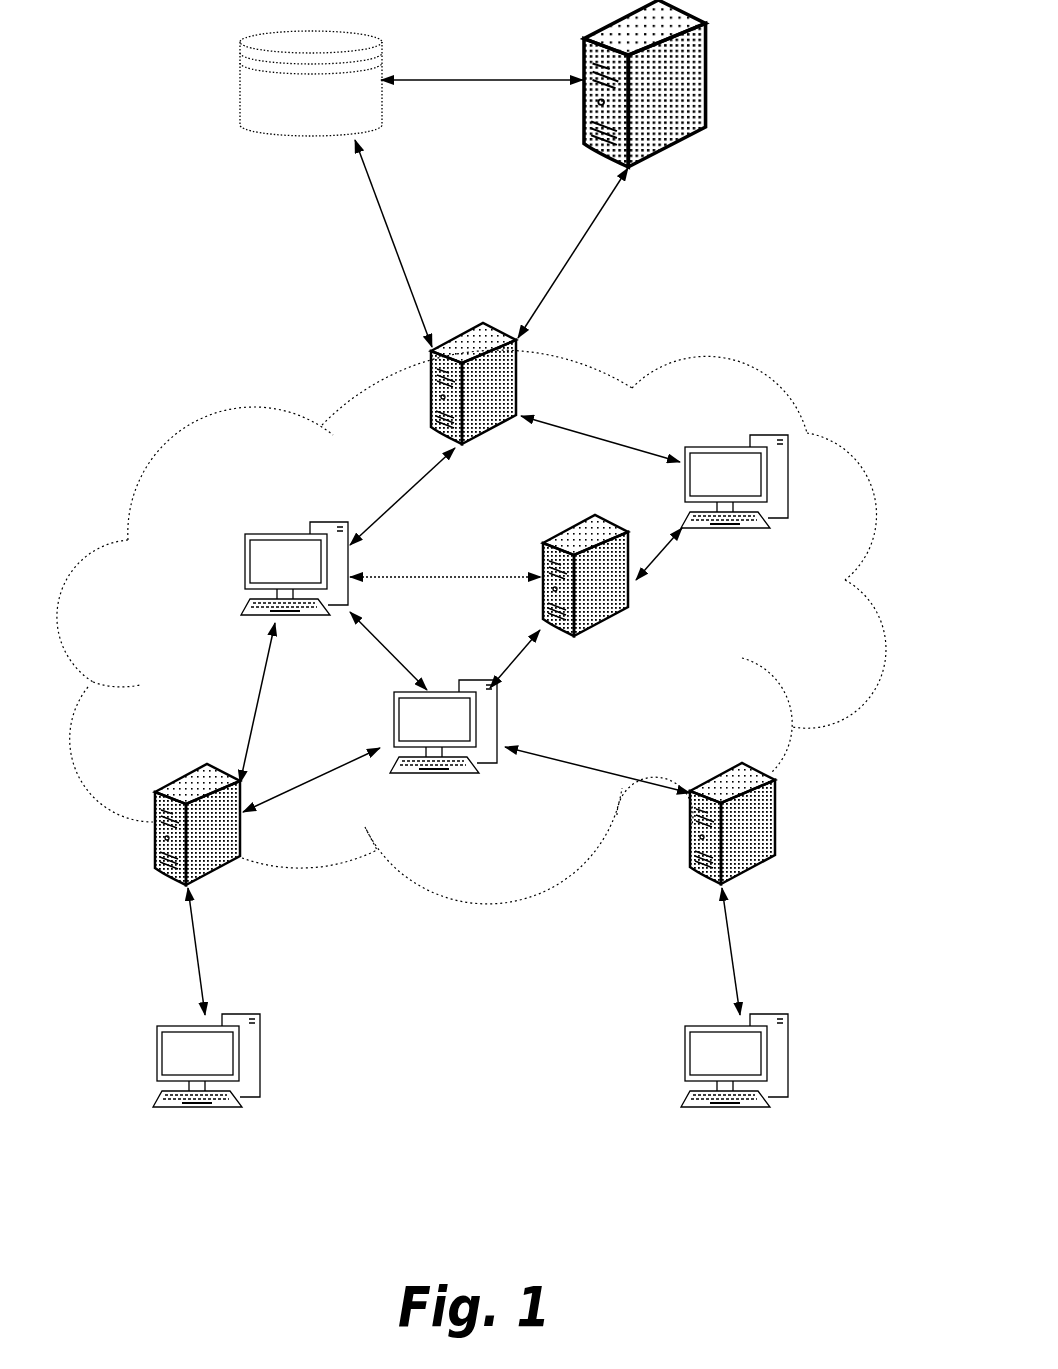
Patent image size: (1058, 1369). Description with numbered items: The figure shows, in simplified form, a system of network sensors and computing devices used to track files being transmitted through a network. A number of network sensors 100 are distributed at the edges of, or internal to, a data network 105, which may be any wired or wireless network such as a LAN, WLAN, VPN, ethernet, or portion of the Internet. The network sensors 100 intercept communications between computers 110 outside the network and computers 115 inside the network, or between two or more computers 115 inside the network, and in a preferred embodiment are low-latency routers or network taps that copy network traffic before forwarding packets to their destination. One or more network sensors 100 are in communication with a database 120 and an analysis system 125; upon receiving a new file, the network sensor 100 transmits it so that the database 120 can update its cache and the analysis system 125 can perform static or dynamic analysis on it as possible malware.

The network sensor 100 is at (517, 352).
The data network 105 is at (152, 611).
The computer outside the network 110 is at (257, 1063).
The computer inside the network 115 is at (282, 533).
The database 120 is at (294, 125).
The analysis system 125 is at (711, 83).